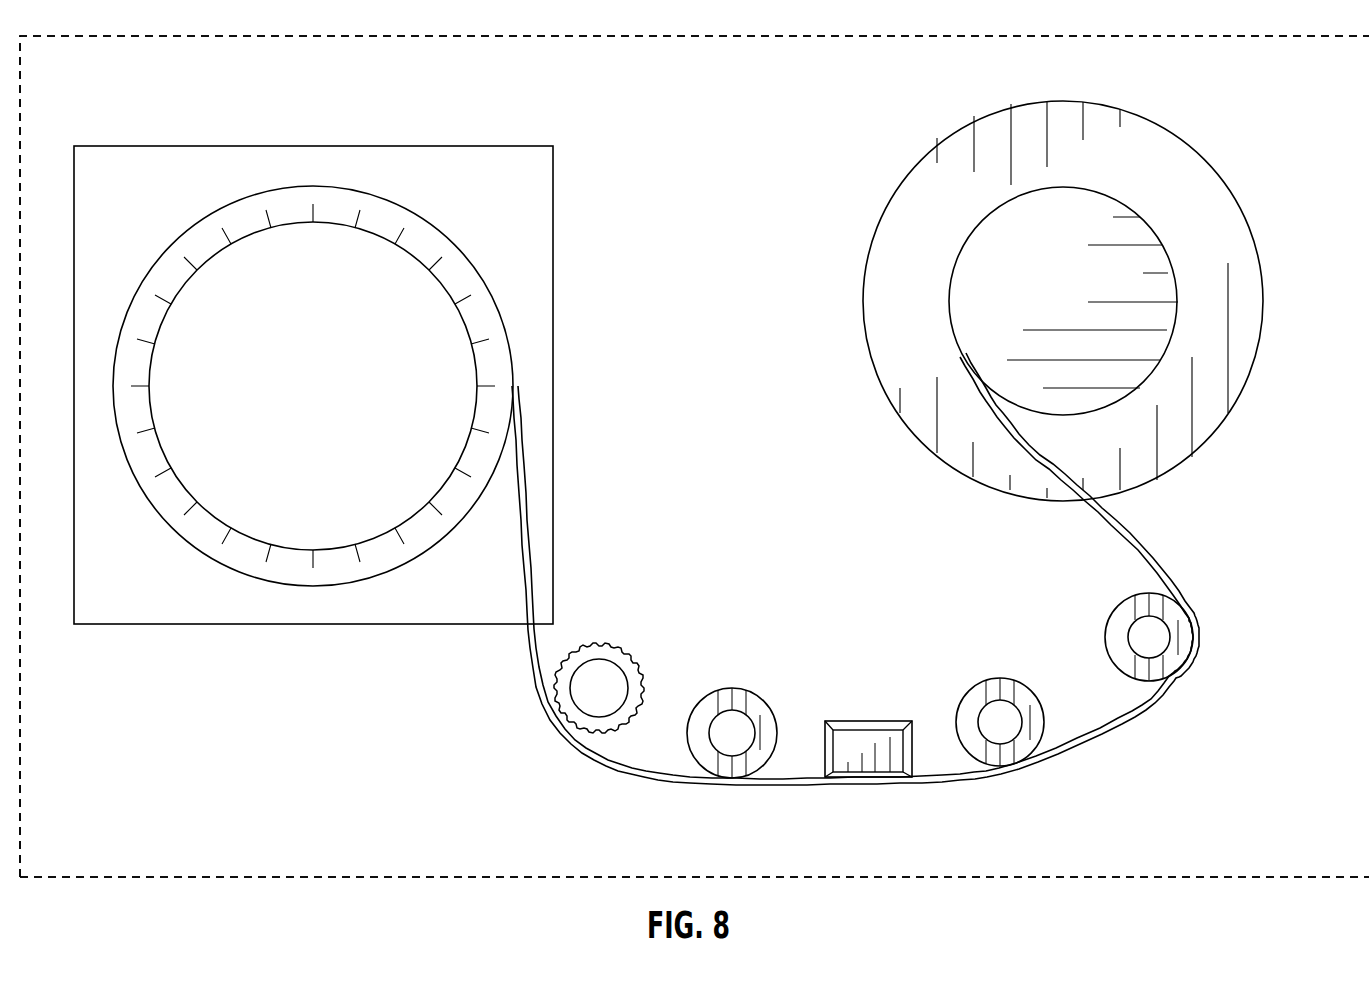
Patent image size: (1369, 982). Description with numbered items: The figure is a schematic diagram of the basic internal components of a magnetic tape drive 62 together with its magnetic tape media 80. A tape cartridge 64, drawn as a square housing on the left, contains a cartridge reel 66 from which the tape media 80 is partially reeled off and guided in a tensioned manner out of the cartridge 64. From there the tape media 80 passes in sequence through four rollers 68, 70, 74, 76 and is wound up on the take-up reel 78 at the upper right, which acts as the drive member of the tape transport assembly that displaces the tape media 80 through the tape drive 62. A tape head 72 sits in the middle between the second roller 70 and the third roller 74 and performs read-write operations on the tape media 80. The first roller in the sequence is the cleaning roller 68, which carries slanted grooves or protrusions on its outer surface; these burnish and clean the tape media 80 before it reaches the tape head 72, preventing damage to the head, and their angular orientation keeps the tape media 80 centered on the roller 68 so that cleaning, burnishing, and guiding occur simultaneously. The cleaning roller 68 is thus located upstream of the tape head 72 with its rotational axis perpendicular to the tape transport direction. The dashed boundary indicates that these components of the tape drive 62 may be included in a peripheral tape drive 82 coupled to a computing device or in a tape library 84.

The magnetic tape drive 62 is at (530, 740).
The tape cartridge 64 is at (248, 182).
The cartridge reel 66 is at (497, 306).
The cleaning roller 68 is at (600, 643).
The second roller 70 is at (732, 689).
The tape head 72 is at (868, 763).
The third roller 74 is at (1000, 685).
The fourth roller 76 is at (1178, 642).
The take-up reel 78 is at (1172, 345).
The magnetic tape media 80 is at (536, 651).
The peripheral tape drive 82 is at (1278, 878).
The tape library 84 is at (1278, 878).